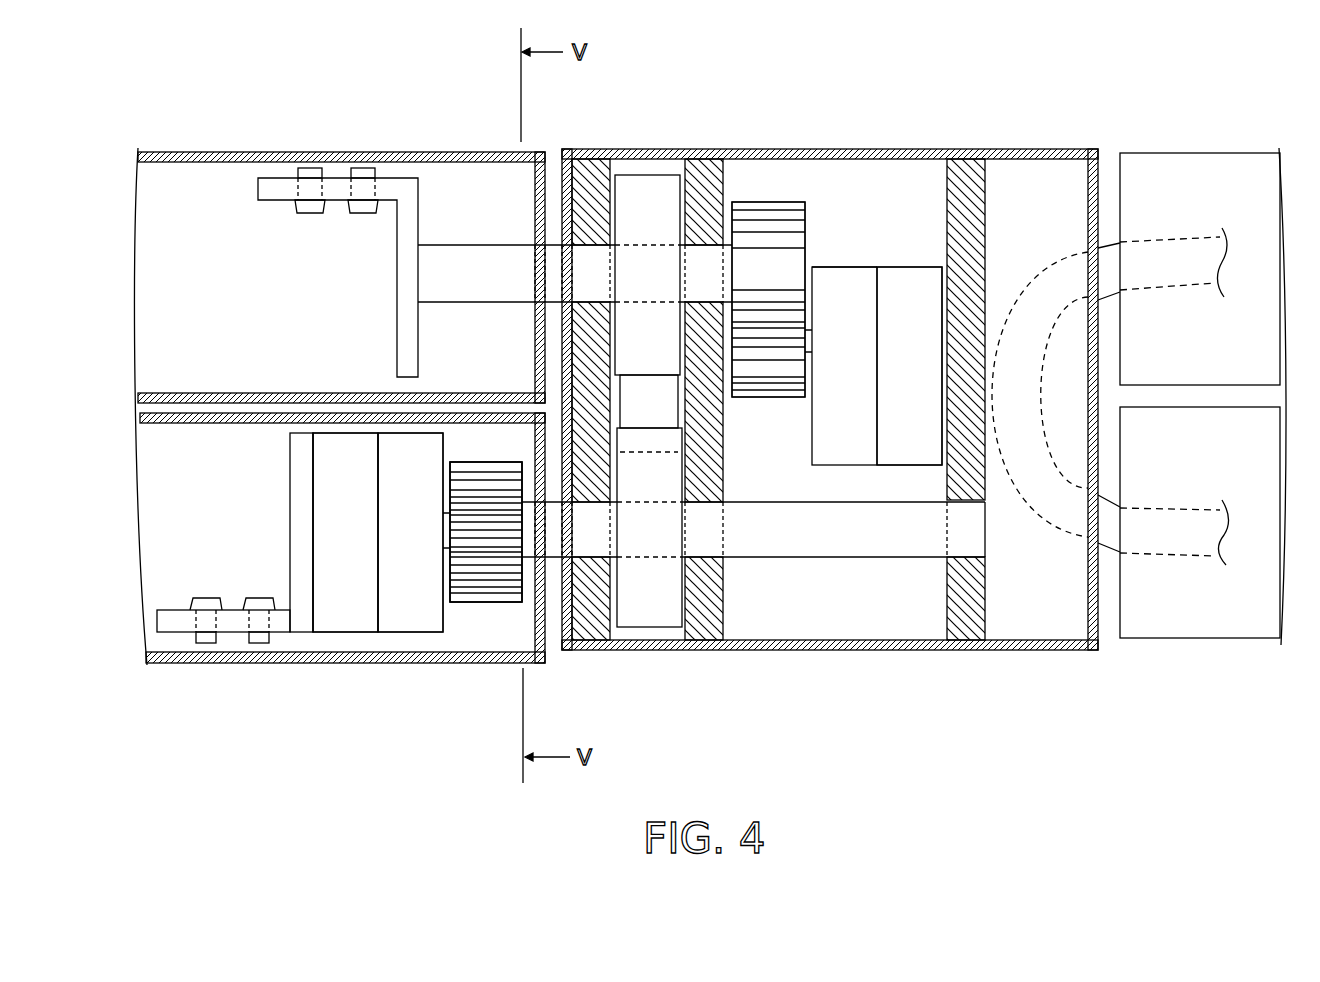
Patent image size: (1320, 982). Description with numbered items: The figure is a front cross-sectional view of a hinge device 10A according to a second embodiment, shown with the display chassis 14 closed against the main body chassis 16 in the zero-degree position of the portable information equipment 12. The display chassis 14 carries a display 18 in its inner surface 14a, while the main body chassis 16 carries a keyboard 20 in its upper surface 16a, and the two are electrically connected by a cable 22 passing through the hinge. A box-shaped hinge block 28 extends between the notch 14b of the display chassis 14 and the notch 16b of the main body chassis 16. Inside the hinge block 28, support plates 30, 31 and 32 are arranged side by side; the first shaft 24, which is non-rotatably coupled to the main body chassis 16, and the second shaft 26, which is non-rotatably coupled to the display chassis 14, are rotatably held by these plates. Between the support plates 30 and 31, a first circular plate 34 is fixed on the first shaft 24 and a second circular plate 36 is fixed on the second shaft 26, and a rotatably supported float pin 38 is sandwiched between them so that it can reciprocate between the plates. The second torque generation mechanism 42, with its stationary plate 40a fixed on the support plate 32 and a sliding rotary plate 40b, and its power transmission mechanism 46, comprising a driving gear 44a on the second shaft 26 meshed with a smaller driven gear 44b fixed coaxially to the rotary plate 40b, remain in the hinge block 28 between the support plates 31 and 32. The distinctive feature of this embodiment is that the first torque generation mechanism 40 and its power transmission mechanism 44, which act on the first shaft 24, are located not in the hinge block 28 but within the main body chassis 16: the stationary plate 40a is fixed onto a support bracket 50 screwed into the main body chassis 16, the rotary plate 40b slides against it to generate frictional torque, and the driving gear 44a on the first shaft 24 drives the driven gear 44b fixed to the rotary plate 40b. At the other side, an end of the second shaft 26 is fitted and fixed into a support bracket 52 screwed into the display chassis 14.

The hinge device 10A is at (975, 70).
The portable information equipment 12 is at (146, 67).
The display chassis 14 is at (341, 251).
The inner surface 14a is at (342, 434).
The notch 14b is at (1118, 168).
The main body chassis 16 is at (342, 567).
The upper surface 16a is at (341, 380).
The notch 16b is at (1120, 628).
The display 18 is at (212, 400).
The keyboard 20 is at (245, 415).
The cable 22 is at (1036, 305).
The first shaft 24 is at (836, 527).
The second shaft 26 is at (468, 270).
The hinge block 28 is at (830, 393).
The support plate 30 is at (592, 160).
The support plate 31 is at (703, 170).
The support plate 32 is at (965, 172).
The first circular plate 34 is at (645, 600).
The second circular plate 36 is at (643, 336).
The float pin 38 is at (647, 400).
The first torque generation mechanism 40 is at (373, 640).
The stationary plate 40a is at (838, 203).
The rotary plate 40b is at (846, 267).
The second torque generation mechanism 42 is at (627, 396).
The power transmission mechanism 44 is at (452, 640).
The driving gear 44a is at (768, 200).
The driven gear 44b is at (767, 398).
The power transmission mechanism 46 is at (765, 444).
The support bracket 50 is at (283, 630).
The support bracket 52 is at (408, 195).